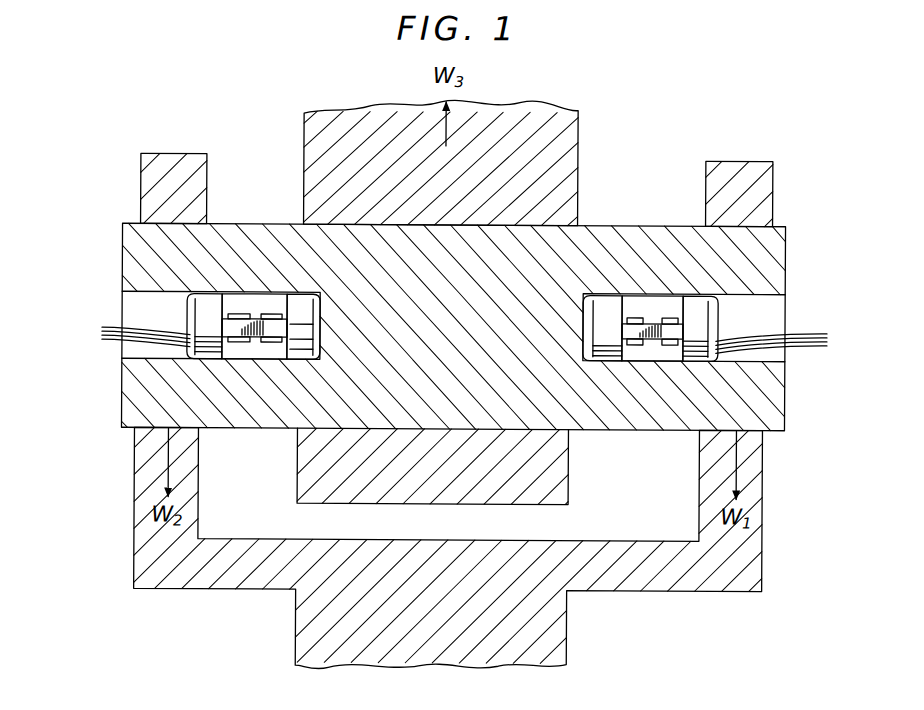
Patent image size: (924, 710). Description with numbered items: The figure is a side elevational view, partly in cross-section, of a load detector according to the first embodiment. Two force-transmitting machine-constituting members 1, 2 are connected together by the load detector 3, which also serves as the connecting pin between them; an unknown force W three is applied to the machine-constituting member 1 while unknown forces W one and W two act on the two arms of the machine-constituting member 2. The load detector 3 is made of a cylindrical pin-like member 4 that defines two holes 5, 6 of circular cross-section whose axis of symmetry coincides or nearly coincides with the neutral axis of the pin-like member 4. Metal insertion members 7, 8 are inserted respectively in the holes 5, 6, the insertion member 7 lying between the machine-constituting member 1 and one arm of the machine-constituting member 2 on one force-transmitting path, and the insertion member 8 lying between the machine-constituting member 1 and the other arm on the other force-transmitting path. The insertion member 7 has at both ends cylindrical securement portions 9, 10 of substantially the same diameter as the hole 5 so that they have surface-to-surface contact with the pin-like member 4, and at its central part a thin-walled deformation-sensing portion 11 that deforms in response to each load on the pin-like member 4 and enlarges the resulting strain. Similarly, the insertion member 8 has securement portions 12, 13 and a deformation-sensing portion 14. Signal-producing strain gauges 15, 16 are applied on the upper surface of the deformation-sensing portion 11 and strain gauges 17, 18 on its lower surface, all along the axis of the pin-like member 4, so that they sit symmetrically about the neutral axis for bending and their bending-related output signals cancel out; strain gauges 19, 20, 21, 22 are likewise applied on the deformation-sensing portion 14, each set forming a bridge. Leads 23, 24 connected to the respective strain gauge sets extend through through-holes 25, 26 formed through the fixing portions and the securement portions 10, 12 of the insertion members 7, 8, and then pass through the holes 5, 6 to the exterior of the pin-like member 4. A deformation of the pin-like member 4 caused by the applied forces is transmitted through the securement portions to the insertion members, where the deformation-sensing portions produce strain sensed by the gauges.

The machine-constituting member 1 is at (580, 130).
The machine-constituting member 2 is at (570, 637).
The load detector 3 is at (612, 223).
The pin-like member 4 is at (786, 268).
The hole 5 is at (775, 320).
The hole 6 is at (128, 308).
The insertion member 7 is at (671, 307).
The insertion member 8 is at (231, 299).
The securement portion 9 is at (600, 300).
The securement portion 10 is at (696, 300).
The deformation-sensing portion 11 is at (654, 303).
The securement portion 12 is at (205, 300).
The securement portion 13 is at (293, 300).
The deformation-sensing portion 14 is at (245, 297).
The strain gauge 15 is at (635, 315).
The strain gauge 16 is at (670, 315).
The strain gauge 17 is at (668, 345).
The strain gauge 18 is at (637, 345).
The strain gauge 19 is at (272, 313).
The strain gauge 20 is at (237, 313).
The strain gauge 21 is at (238, 343).
The strain gauge 22 is at (268, 343).
The lead 23 is at (800, 347).
The lead 24 is at (115, 345).
The through-hole 25 is at (705, 365).
The through-hole 26 is at (190, 364).